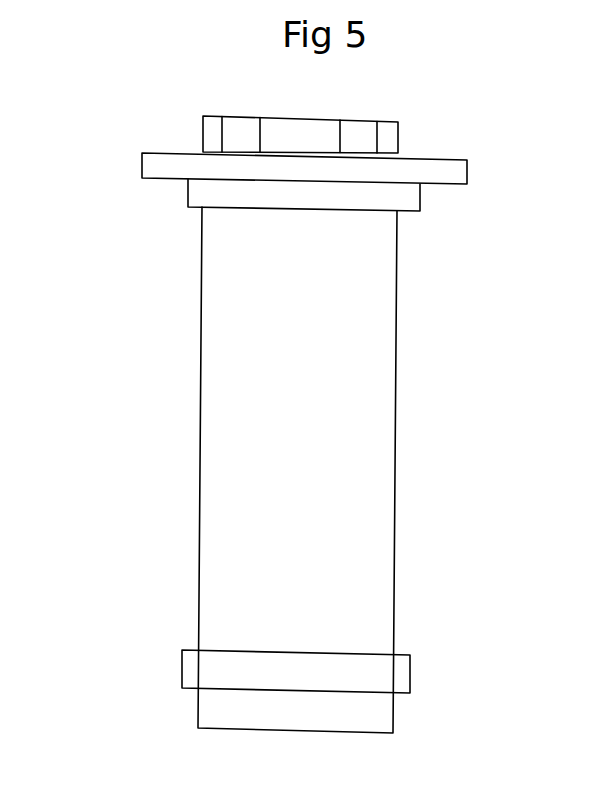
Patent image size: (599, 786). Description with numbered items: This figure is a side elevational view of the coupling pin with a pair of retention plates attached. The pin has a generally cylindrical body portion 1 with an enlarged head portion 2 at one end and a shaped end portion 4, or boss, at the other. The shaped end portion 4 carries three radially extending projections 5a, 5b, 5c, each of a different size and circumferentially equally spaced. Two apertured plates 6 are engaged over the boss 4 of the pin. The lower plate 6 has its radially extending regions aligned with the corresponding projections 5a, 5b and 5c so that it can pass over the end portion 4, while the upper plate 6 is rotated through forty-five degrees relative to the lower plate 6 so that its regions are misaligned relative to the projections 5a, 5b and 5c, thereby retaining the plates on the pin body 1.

The cylindrical body portion 1 is at (383, 433).
The enlarged head portion 2 is at (210, 663).
The shaped end portion 4 is at (307, 118).
The radially extending projection 5a is at (310, 145).
The radially extending projection 5b is at (383, 140).
The radially extending projection 5c is at (217, 138).
The apertured plate 6 is at (203, 192).